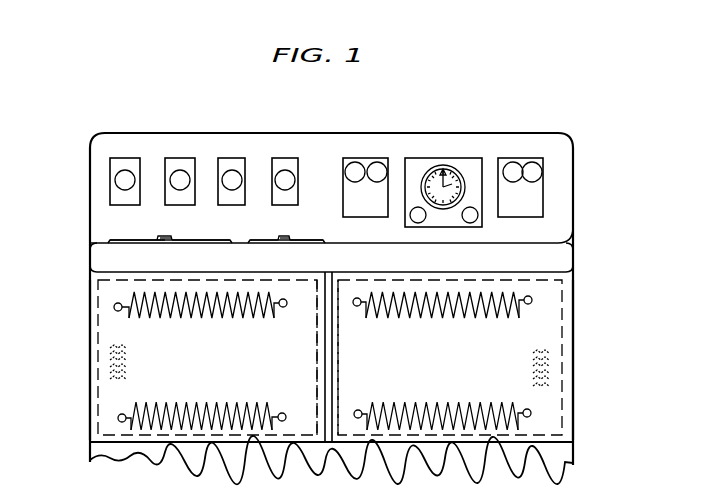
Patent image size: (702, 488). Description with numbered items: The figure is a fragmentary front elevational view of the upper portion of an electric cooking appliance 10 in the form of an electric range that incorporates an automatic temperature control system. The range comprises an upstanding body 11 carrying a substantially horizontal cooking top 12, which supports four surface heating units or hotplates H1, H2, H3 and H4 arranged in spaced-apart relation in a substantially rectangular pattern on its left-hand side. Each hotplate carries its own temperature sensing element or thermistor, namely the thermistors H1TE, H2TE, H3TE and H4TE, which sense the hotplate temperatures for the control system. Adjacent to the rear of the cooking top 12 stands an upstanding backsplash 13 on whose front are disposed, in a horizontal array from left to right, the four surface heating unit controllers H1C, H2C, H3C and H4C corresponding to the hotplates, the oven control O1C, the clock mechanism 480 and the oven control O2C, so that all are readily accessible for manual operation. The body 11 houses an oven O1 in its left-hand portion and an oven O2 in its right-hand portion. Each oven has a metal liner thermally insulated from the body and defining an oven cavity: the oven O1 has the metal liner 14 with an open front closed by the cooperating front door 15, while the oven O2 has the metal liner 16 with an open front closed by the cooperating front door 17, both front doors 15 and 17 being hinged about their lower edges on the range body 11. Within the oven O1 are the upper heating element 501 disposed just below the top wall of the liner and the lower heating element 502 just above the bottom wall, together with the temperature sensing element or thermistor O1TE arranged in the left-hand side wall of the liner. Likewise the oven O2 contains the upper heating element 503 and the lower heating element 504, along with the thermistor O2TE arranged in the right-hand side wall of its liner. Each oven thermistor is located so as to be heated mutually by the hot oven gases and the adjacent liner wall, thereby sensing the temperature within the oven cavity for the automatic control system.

The electric cooking appliance 10 is at (58, 270).
The upstanding body 11 is at (573, 300).
The cooking top 12 is at (553, 243).
The backsplash 13 is at (573, 148).
The metal liner 14 is at (317, 372).
The front door 15 is at (90, 400).
The metal liner 16 is at (340, 352).
The front door 17 is at (573, 397).
The clock mechanism 480 is at (440, 163).
The upper heating element 501 is at (206, 318).
The lower heating element 502 is at (207, 405).
The upper heating element 503 is at (425, 315).
The lower heating element 504 is at (430, 403).
The surface heating unit controller H1C is at (125, 158).
The surface heating unit controller H2C is at (180, 158).
The surface heating unit controller H3C is at (233, 158).
The surface heating unit controller H4C is at (288, 158).
The oven control O1C is at (368, 158).
The oven control O2C is at (518, 158).
The surface heating unit H1 is at (150, 240).
The surface heating unit H2 is at (207, 240).
The surface heating unit H3 is at (270, 240).
The surface heating unit H4 is at (297, 240).
The temperature sensing element H1TE is at (158, 237).
The temperature sensing element H2TE is at (165, 241).
The temperature sensing element H3TE is at (281, 240).
The temperature sensing element H4TE is at (287, 241).
The oven O1 is at (157, 339).
The oven O2 is at (518, 335).
The temperature sensing element O1TE is at (127, 355).
The temperature sensing element O2TE is at (533, 372).